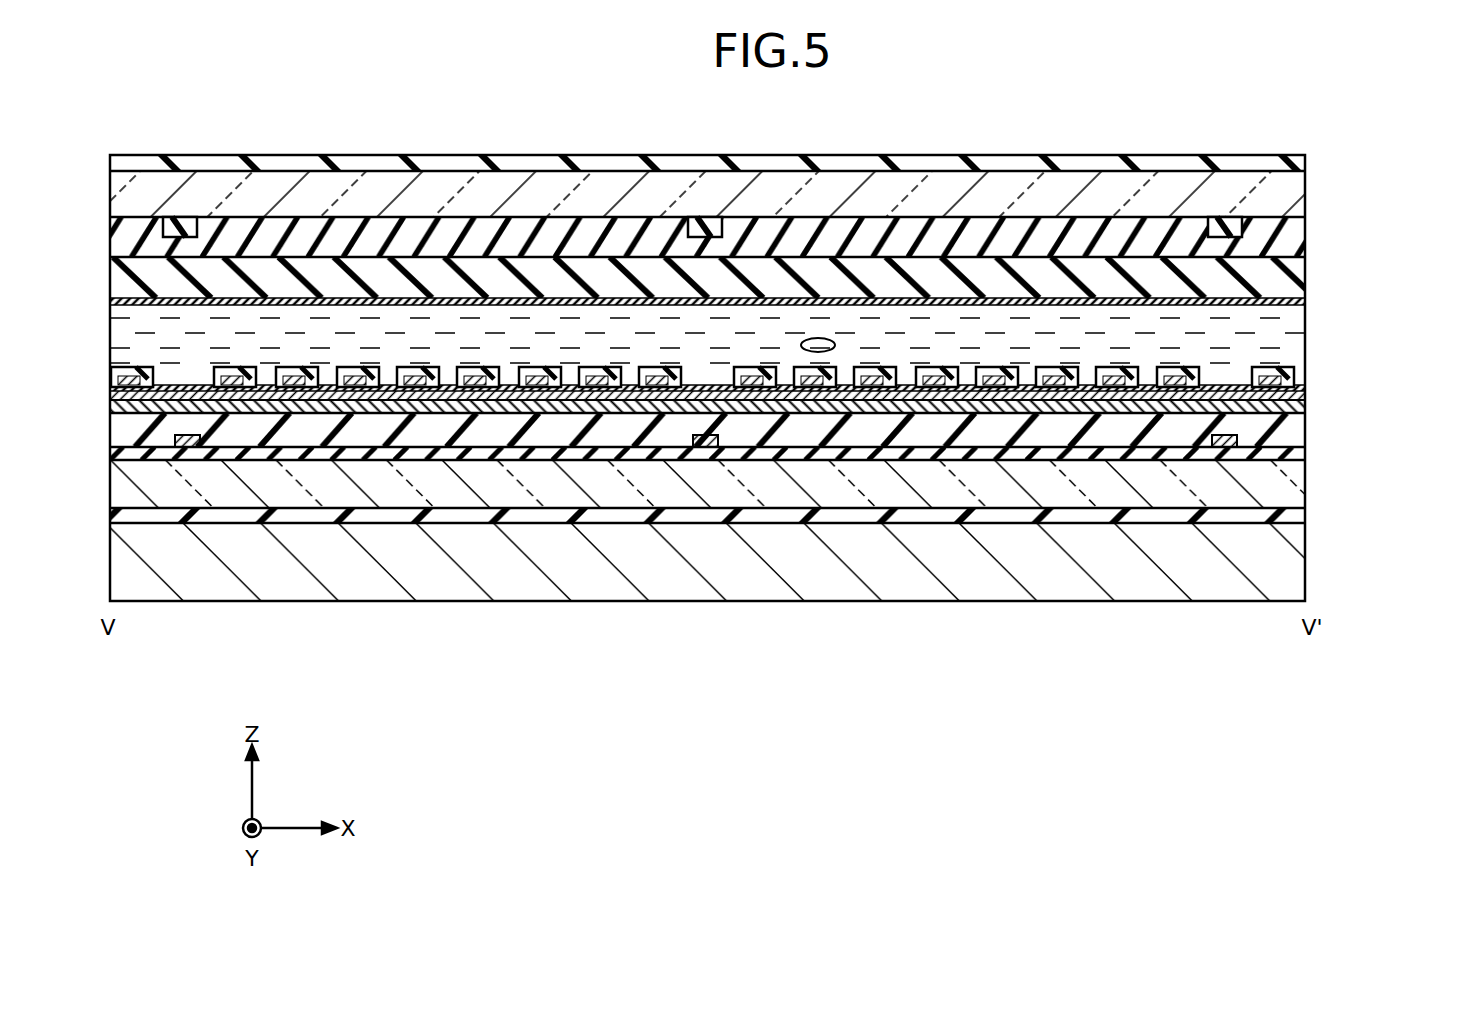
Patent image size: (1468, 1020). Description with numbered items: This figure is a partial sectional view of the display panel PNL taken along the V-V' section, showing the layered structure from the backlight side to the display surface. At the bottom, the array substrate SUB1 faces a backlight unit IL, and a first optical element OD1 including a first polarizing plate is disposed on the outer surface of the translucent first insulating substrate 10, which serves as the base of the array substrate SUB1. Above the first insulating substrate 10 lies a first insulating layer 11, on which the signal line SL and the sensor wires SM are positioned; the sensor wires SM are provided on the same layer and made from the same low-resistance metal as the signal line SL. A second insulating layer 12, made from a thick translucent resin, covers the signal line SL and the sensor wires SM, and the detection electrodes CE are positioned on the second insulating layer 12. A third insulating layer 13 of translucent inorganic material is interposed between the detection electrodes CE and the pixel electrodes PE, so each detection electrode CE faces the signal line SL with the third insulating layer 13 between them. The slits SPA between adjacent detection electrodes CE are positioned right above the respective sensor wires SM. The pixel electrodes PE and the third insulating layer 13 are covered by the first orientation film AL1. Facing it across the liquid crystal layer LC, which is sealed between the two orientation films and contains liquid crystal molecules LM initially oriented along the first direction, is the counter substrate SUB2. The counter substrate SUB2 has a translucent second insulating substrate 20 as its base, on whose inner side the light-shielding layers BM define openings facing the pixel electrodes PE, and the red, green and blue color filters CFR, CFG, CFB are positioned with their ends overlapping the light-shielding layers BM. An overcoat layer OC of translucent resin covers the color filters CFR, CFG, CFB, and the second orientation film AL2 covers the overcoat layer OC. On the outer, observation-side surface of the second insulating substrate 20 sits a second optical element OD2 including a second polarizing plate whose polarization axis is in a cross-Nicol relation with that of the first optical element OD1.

The display panel PNL is at (1308, 146).
The second optical element OD2 is at (1280, 163).
The second insulating substrate 20 is at (1283, 190).
The blue color filter CFB is at (122, 212).
The red color filter CFR is at (508, 212).
The green color filter CFG is at (915, 212).
The light-shielding layer BM is at (183, 228).
The counter substrate SUB2 is at (1318, 237).
The overcoat layer OC is at (1283, 268).
The second orientation film AL2 is at (1283, 302).
The liquid crystal layer LC is at (1283, 330).
The liquid crystal molecule LM is at (818, 338).
The first orientation film AL1 is at (1292, 386).
The pixel electrode PE is at (240, 388).
The slit SPA is at (191, 362).
The third insulating layer 13 is at (1292, 395).
The detection electrode CE is at (1292, 410).
The array substrate SUB1 is at (1319, 418).
The sensor wire SM is at (188, 449).
The signal line SL is at (707, 449).
The second insulating layer 12 is at (1292, 440).
The first insulating layer 11 is at (1292, 462).
The first insulating substrate 10 is at (1285, 495).
The first optical element OD1 is at (1285, 522).
The backlight unit IL is at (1250, 582).